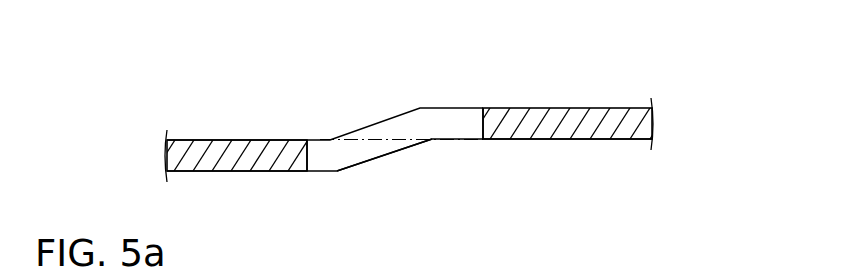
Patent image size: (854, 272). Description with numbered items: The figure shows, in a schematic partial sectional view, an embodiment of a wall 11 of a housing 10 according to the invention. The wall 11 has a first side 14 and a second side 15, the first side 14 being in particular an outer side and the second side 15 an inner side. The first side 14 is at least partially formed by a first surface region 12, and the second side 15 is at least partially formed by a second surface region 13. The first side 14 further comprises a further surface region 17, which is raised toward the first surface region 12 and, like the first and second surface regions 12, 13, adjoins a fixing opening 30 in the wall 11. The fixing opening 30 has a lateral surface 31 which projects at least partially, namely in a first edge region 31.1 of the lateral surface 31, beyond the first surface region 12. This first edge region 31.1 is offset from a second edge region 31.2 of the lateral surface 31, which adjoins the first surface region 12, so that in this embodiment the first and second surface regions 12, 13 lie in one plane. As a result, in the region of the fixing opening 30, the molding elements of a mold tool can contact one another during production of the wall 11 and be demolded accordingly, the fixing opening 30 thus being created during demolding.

The housing 10 is at (152, 152).
The wall 11 is at (642, 123).
The first surface region 12 is at (593, 141).
The second surface region 13 is at (228, 139).
The first side 14 is at (533, 162).
The second side 15 is at (197, 108).
The further surface region 17 is at (228, 171).
The fixing opening 30 is at (370, 113).
The lateral surface 31 is at (396, 129).
The first edge region 31.1 is at (310, 153).
The second edge region 31.2 is at (482, 118).